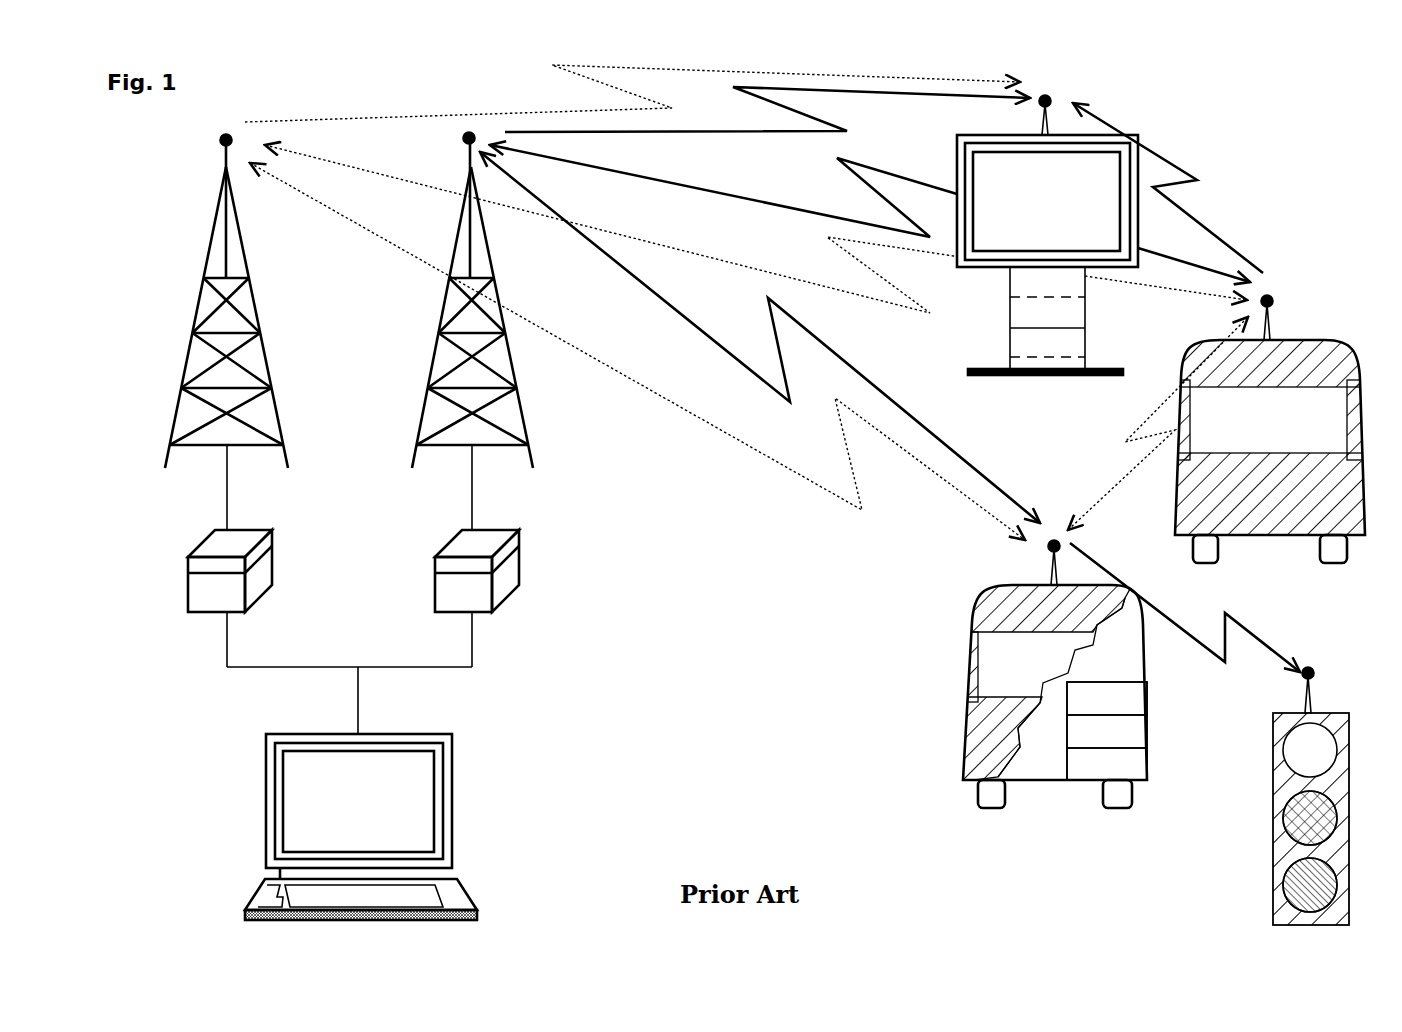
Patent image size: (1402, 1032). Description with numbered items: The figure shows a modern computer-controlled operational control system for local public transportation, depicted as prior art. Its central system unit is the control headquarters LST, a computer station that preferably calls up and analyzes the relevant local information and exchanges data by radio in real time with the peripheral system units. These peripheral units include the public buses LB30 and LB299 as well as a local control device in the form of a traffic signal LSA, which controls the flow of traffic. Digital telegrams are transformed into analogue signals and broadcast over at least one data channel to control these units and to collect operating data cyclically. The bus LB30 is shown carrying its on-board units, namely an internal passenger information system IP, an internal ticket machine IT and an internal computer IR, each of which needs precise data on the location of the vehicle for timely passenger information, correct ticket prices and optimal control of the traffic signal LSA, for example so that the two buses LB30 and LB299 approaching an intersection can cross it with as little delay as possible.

The control headquarters LST is at (361, 827).
The public bus LB299 is at (1270, 430).
The public bus LB30 is at (1052, 675).
The internal passenger information system IP is at (1107, 698).
The internal ticket machine IT is at (1107, 731).
The internal computer IR is at (1107, 764).
The traffic signal LSA is at (1285, 797).